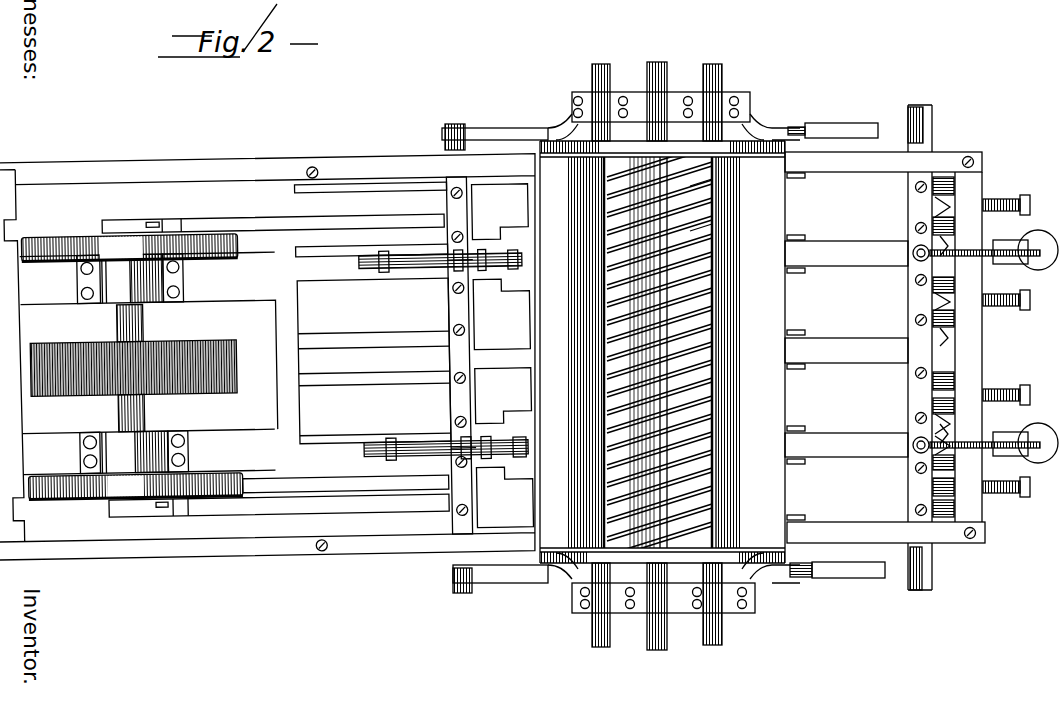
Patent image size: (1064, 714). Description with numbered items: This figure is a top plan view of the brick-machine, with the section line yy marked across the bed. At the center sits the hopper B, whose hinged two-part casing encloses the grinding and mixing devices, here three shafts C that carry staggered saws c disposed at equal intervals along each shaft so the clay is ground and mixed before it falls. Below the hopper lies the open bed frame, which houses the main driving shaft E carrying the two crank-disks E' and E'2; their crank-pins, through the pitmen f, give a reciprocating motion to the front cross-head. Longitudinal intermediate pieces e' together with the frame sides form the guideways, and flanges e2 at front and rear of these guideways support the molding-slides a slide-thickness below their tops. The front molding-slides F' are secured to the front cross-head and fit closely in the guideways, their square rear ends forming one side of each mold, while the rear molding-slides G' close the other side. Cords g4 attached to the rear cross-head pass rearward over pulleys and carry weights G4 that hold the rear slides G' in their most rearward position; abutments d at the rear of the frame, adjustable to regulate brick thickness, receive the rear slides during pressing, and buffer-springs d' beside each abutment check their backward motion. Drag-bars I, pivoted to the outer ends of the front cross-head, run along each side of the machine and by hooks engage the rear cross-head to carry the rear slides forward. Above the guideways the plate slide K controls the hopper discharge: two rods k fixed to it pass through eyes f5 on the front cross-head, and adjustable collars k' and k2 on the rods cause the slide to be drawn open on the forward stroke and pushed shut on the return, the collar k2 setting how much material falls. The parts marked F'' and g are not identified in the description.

The shaft E is at (271, 357).
The crank-disk E' is at (129, 232).
The crank-disk E'2 is at (136, 507).
The pitman f is at (276, 353).
The flange e2 is at (387, 406).
The intermediate piece e' is at (626, 350).
The front molding-slide F' is at (374, 361).
The blocks F'' is at (503, 356).
The rod k is at (443, 355).
The collar k2 is at (383, 280).
The collar k' is at (482, 374).
The eye f5 is at (472, 298).
The slide K is at (506, 366).
The hopper B is at (737, 352).
The saw c is at (697, 199).
The shaft C is at (663, 356).
The drag-bar I is at (621, 361).
The dotted line yy y is at (855, 122).
The buffer-spring d' is at (968, 347).
The abutment d is at (974, 364).
The tabs g is at (802, 487).
The rear molding-slide G' is at (888, 354).
The cord g4 is at (992, 246).
The weight G4 is at (1006, 346).